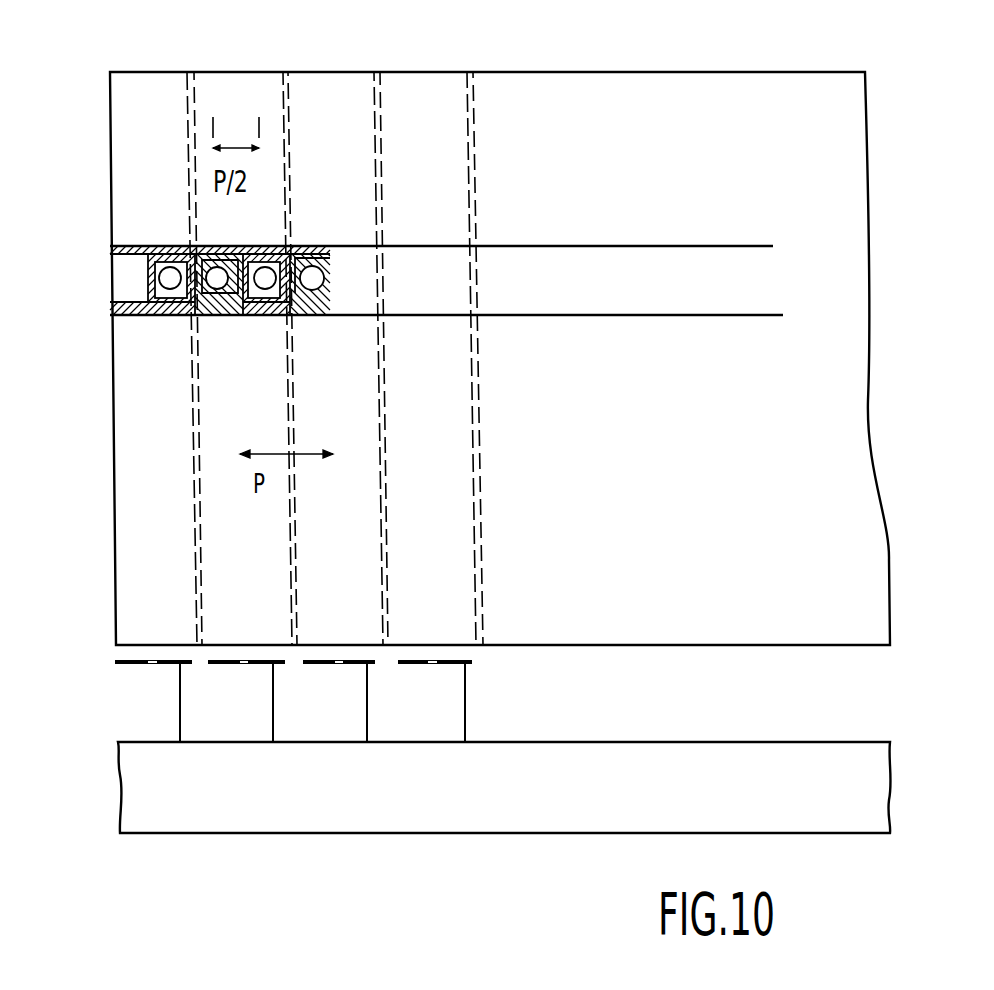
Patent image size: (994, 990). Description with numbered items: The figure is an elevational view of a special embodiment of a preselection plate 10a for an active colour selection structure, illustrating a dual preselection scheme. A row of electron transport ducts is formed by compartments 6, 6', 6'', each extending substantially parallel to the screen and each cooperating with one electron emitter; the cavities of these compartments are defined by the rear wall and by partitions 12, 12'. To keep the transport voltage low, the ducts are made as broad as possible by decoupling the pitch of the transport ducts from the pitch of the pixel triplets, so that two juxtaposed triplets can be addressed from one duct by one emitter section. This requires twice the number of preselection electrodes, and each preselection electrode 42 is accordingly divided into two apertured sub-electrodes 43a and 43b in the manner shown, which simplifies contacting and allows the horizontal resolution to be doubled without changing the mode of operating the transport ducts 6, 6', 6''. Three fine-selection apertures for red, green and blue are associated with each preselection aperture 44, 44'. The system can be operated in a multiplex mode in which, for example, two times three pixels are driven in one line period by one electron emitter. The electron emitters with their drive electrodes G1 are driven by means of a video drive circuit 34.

The rotor / sensor body 10a is at (707, 92).
The compartment 6 is at (212, 336).
The compartment 6' is at (310, 336).
The compartment 6'' is at (407, 336).
The preselection electrode 42 is at (110, 278).
The apertured sub-electrode 43a is at (160, 246).
The apertured sub-electrode 43b is at (126, 316).
The preselection aperture 44 is at (222, 311).
The preselection aperture 44' is at (267, 311).
The drive electrode G1 is at (131, 666).
The partition 12 is at (243, 682).
The partition 12' is at (336, 682).
The video drive circuit 34 is at (192, 817).